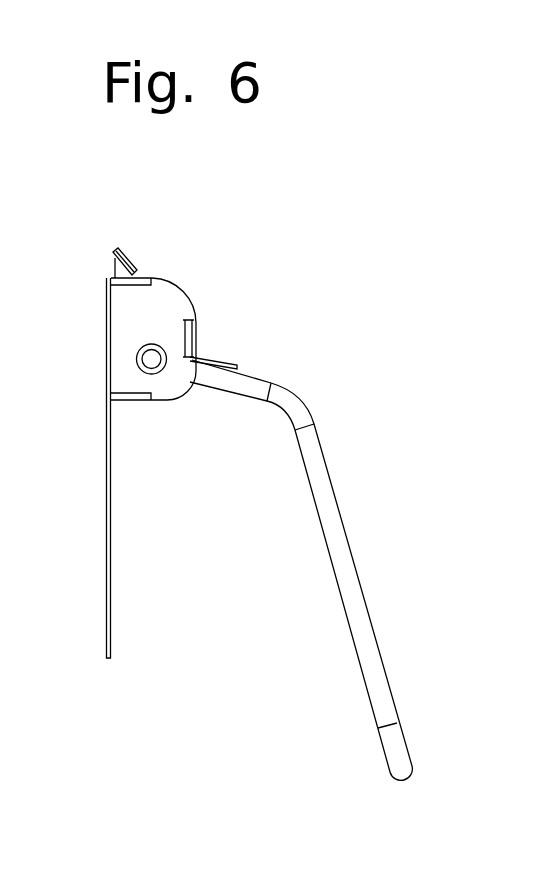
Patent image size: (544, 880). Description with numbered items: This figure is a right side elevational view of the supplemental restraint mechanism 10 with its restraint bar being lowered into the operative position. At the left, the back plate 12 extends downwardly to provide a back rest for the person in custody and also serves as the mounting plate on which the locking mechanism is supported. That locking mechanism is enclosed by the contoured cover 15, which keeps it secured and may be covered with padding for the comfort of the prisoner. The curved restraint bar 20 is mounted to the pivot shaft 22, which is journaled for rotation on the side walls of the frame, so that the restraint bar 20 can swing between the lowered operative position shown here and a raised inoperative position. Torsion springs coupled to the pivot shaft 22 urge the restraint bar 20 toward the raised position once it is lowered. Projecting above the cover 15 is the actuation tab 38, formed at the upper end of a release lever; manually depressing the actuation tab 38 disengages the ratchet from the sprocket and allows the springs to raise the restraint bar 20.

The supplemental restraint mechanism 10 is at (370, 288).
The back plate 12 is at (111, 544).
The cover 15 is at (157, 302).
The restraint bar 20 is at (347, 600).
The pivot shaft 22 is at (158, 372).
The actuation tab 38 is at (122, 258).